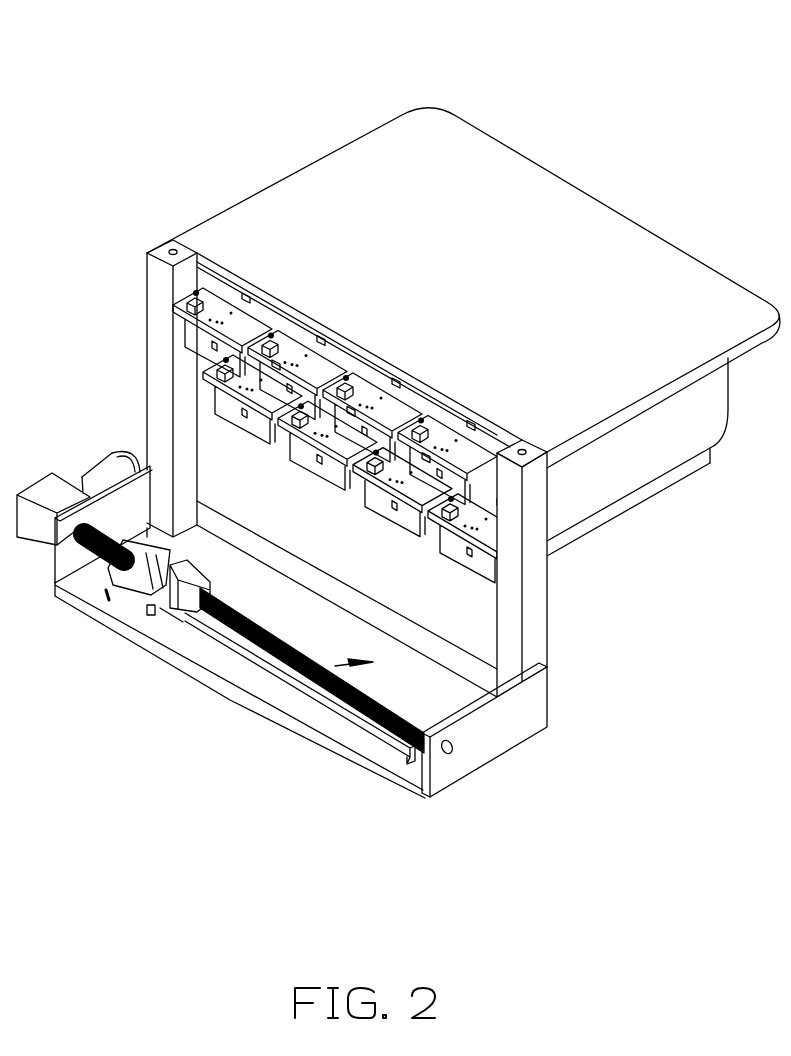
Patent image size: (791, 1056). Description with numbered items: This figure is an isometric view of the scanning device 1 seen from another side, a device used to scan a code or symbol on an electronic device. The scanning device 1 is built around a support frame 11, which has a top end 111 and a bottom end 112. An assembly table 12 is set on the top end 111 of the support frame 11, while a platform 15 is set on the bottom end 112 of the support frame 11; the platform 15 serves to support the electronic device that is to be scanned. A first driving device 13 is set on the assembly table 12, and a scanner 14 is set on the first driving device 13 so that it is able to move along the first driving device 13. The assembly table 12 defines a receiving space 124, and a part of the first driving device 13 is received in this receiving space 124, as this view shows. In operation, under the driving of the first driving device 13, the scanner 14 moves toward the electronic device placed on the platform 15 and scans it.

The scanning device 1 is at (413, 62).
The support frame 11 is at (657, 577).
The top end 111 is at (533, 720).
The bottom end 112 is at (532, 473).
The assembly table 12 is at (477, 745).
The receiving space 124 is at (283, 680).
The first driving device 13 is at (230, 643).
The scanner 14 is at (130, 585).
The platform 15 is at (630, 483).